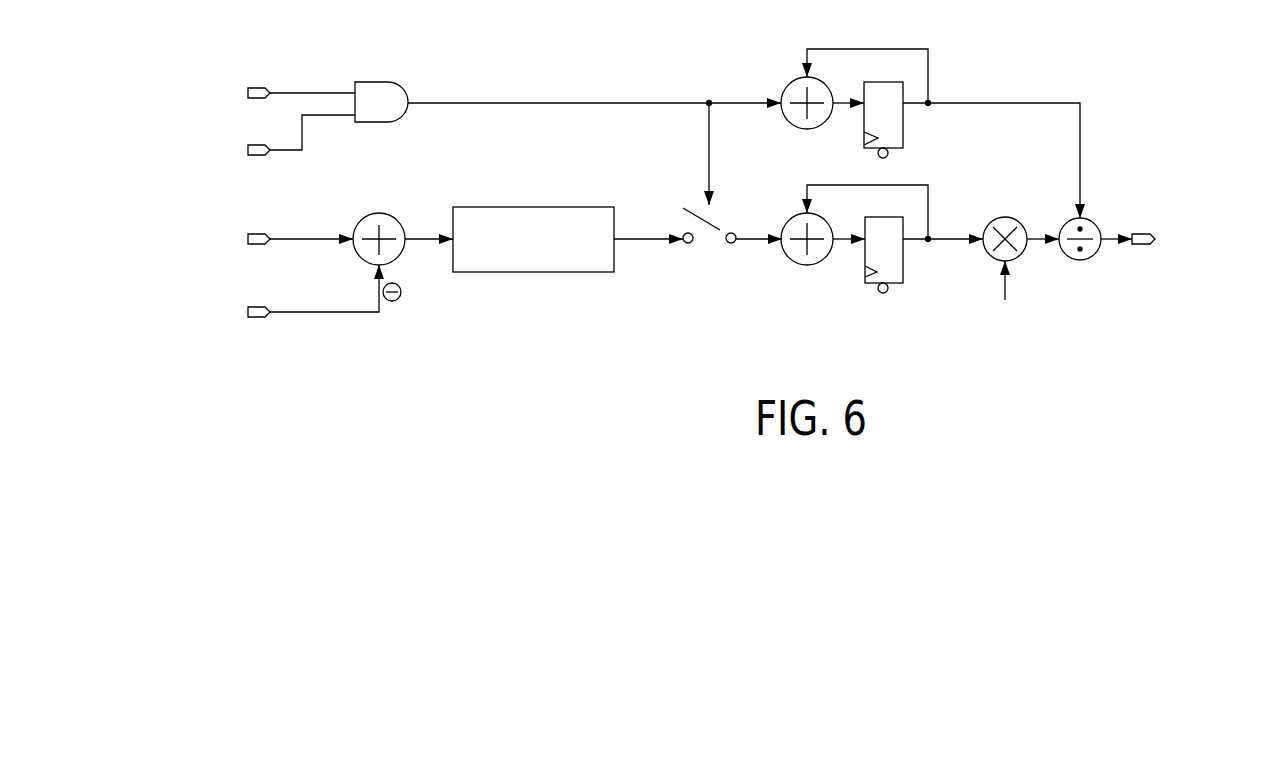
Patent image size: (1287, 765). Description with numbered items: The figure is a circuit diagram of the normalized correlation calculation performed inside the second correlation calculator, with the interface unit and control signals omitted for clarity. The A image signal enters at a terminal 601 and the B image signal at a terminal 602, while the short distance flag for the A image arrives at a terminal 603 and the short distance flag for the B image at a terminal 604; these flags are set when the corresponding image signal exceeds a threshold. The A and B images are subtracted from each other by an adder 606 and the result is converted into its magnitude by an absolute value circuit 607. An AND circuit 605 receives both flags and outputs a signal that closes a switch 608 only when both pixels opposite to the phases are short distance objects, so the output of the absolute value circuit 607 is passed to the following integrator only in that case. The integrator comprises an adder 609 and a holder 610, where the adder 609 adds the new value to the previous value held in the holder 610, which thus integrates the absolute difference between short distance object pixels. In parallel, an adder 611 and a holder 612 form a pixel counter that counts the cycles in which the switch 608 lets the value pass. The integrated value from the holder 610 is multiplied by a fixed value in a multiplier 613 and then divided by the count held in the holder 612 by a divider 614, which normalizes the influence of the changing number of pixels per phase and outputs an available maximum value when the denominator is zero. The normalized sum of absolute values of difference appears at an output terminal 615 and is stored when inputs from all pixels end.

The terminal 601 is at (270, 234).
The terminal 602 is at (248, 322).
The terminal 603 is at (268, 87).
The terminal 604 is at (250, 156).
The AND circuit 605 is at (402, 82).
The adder 606 is at (404, 220).
The absolute value circuit 607 is at (550, 207).
The switch 608 is at (719, 220).
The adder 609 is at (785, 257).
The holder 610 is at (865, 265).
The adder 611 is at (797, 78).
The holder 612 is at (903, 144).
The multiplier 613 is at (1013, 217).
The divider 614 is at (1095, 223).
The output terminal 615 is at (1140, 246).